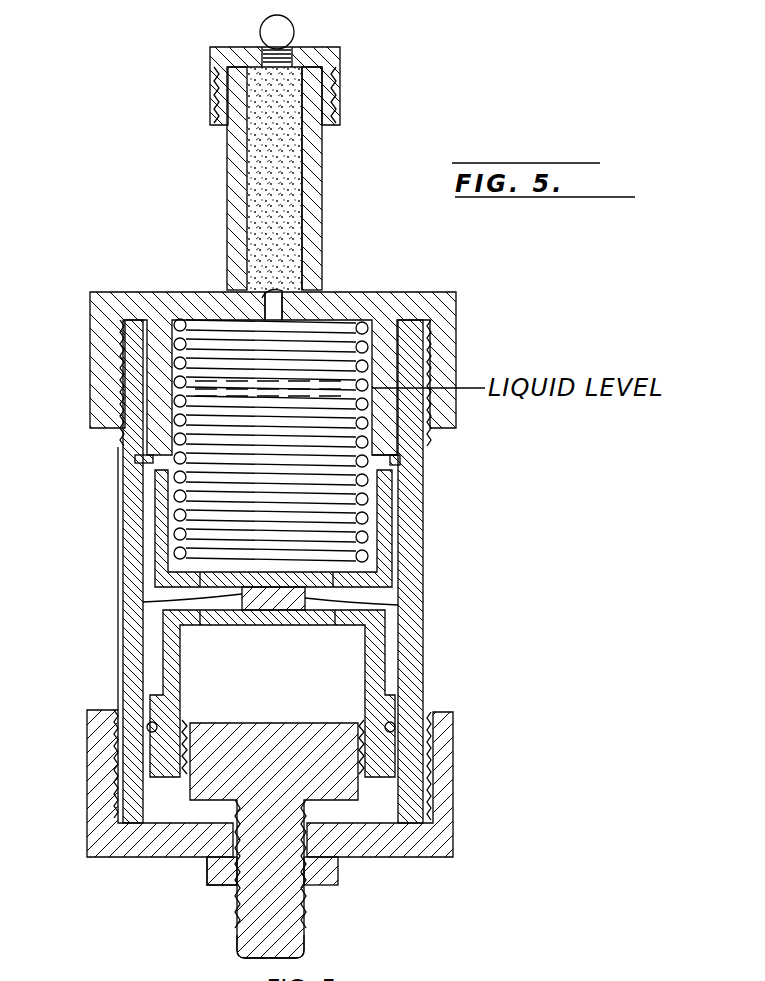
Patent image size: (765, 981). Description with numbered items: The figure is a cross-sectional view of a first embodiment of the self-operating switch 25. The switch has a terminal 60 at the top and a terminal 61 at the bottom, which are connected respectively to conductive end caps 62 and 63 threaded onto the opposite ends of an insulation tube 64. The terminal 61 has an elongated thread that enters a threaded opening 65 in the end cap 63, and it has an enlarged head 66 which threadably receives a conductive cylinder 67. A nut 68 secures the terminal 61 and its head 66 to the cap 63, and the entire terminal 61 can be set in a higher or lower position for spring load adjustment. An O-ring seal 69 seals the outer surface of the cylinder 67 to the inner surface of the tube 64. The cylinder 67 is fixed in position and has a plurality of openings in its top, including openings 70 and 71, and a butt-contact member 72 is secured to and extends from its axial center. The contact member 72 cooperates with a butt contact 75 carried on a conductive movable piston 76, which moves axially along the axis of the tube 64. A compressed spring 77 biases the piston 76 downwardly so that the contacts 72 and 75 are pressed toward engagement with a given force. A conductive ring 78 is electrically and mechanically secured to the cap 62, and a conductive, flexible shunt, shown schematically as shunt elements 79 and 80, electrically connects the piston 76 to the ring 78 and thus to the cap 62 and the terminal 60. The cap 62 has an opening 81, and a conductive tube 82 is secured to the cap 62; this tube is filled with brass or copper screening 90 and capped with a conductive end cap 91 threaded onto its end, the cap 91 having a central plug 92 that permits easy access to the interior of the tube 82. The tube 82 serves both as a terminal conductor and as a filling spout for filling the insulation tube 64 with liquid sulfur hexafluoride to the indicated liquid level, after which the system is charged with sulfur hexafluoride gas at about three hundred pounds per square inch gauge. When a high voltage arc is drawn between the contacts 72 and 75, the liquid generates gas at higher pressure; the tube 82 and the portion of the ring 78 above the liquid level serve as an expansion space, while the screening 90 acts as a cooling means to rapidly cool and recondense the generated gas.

The central plug 92 is at (294, 31).
The conductive end cap 91 is at (340, 94).
The brass or copper screening 90 is at (283, 170).
The terminal 60 is at (323, 201).
The conductive tube 82 is at (321, 253).
The opening 81 is at (272, 299).
The compressed spring 77 is at (368, 332).
The conductive end cap 62 is at (458, 338).
The conductive ring 78 is at (385, 443).
The shunt element 79 is at (128, 458).
The shunt element 80 is at (400, 468).
The conductive movable piston 76 is at (386, 518).
The self-operating switch 25 is at (118, 565).
The butt-contact member 72 is at (306, 598).
The butt contact 75 is at (143, 602).
The conductive cylinder 67 is at (165, 628).
The insulation tube 64 is at (425, 652).
The opening 70 is at (202, 627).
The opening 71 is at (333, 627).
The enlarged head 66 is at (290, 725).
The O-ring seal 69 is at (148, 730).
The conductive end cap 63 is at (453, 806).
The nut 68 is at (339, 870).
The threaded opening 65 is at (208, 883).
The terminal 61 is at (310, 925).